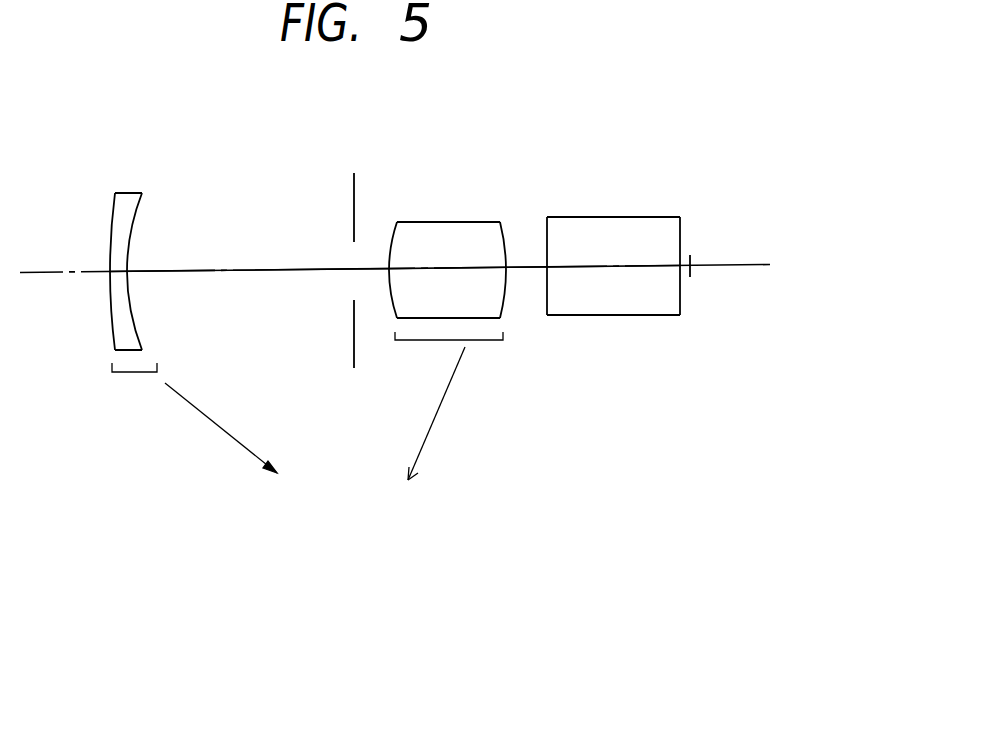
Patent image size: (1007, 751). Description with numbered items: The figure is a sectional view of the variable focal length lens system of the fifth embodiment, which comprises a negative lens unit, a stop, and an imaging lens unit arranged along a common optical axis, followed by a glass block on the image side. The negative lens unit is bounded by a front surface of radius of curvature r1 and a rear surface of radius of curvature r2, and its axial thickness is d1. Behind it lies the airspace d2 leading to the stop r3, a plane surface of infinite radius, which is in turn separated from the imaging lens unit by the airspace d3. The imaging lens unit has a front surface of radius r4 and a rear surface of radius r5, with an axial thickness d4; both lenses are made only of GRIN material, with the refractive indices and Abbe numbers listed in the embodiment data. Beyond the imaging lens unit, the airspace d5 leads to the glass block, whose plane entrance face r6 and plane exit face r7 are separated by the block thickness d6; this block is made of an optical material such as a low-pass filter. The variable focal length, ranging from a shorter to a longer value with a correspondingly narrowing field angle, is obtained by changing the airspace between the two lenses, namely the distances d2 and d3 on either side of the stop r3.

The radius of curvature of first lens surface r1 is at (110, 210).
The radius of curvature of second lens surface r2 is at (139, 210).
The stop r3 is at (352, 193).
The radius of curvature of fourth lens surface r4 is at (393, 238).
The radius of curvature of fifth lens surface r5 is at (503, 237).
The radius of curvature of sixth surface r6 is at (546, 233).
The radius of curvature of seventh surface r7 is at (680, 227).
The thickness of first lens d1 is at (118, 273).
The airspace between first lens and stop d2 is at (218, 273).
The airspace between stop and imaging lens d3 is at (372, 272).
The thickness of imaging lens d4 is at (445, 272).
The airspace between imaging lens and glass block d5 is at (520, 272).
The thickness of glass block d6 is at (600, 267).